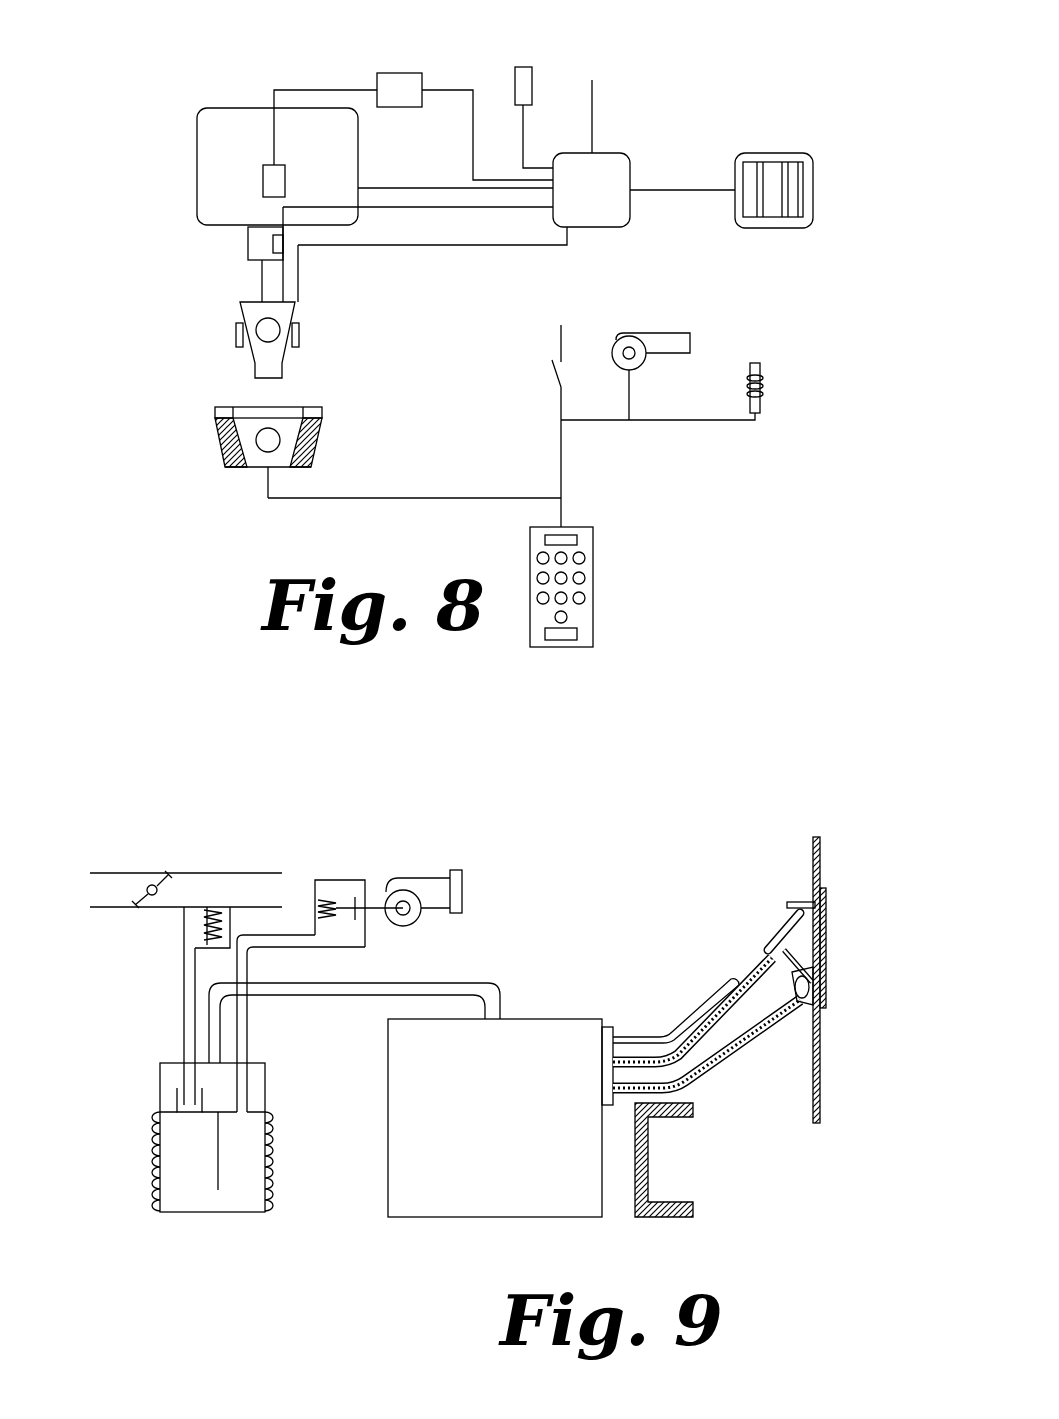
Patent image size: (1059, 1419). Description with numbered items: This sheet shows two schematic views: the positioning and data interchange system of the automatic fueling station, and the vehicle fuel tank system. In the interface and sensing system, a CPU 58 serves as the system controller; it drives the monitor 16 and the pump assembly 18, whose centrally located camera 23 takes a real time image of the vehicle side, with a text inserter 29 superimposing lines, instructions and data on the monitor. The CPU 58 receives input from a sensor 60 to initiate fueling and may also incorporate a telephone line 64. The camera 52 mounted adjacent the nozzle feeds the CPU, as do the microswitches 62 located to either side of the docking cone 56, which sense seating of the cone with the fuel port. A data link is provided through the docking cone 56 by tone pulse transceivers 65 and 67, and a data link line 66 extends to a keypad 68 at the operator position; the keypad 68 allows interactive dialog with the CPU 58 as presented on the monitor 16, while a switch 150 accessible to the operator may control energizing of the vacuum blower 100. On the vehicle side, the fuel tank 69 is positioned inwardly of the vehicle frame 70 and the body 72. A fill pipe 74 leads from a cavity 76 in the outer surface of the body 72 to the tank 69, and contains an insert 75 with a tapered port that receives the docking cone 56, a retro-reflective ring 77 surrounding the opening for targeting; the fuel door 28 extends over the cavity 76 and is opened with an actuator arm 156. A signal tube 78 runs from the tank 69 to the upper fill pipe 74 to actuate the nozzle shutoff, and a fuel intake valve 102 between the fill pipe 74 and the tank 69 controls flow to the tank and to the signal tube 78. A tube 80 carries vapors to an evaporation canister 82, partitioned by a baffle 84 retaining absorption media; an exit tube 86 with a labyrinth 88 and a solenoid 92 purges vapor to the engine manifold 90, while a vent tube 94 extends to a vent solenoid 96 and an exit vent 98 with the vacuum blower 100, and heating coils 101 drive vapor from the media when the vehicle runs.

In FIG. 8, the monitor 16 is at (770, 153).
In FIG. 8, the pump assembly 18 is at (212, 108).
In FIG. 8, the camera 23 is at (263, 183).
In FIG. 9, the fuel door 28 is at (826, 954).
In FIG. 8, the text inserter 29 is at (390, 73).
In FIG. 8, the camera 52 is at (250, 233).
In FIG. 8, the docking cone 56 is at (253, 362).
In FIG. 8, the CPU 58 is at (620, 153).
In FIG. 8, the sensor 60 is at (523, 67).
In FIG. 8, the microswitches 62 is at (300, 338).
In FIG. 8, the telephone line 64 is at (592, 106).
In FIG. 8, the tone pulse transceiver 65 is at (270, 330).
In FIG. 8, the data link line 66 is at (470, 498).
In FIG. 8, the tone pulse transceiver 67 is at (266, 452).
In FIG. 8, the keypad 68 is at (593, 565).
In FIG. 9, the fuel tank 69 is at (458, 1218).
In FIG. 9, the vehicle frame 70 is at (648, 1150).
In FIG. 9, the body 72 is at (820, 862).
In FIG. 9, the fill pipe 74 is at (737, 1050).
In FIG. 8, the insert 75 is at (220, 449).
In FIG. 9, the insert 75 is at (822, 980).
In FIG. 9, the cavity 76 is at (823, 928).
In FIG. 8, the retro-reflective ring 77 is at (322, 408).
In FIG. 9, the retro-reflective ring 77 is at (790, 926).
In FIG. 9, the signal tube 78 is at (684, 1016).
In FIG. 9, the tube 80 is at (483, 984).
In FIG. 9, the evaporation canister 82 is at (227, 1213).
In FIG. 9, the baffle 84 is at (215, 1147).
In FIG. 9, the exit tube 86 is at (184, 990).
In FIG. 9, the labyrinth 88 is at (177, 1098).
In FIG. 9, the engine manifold 90 is at (222, 873).
In FIG. 9, the solenoid 92 is at (205, 923).
In FIG. 9, the vent tube 94 is at (249, 1023).
In FIG. 9, the vent solenoid 96 is at (332, 905).
In FIG. 9, the exit vent 98 is at (368, 935).
In FIG. 8, the vacuum blower 100 is at (655, 333).
In FIG. 9, the vacuum blower 100 is at (406, 878).
In FIG. 9, the heating coils 101 is at (278, 1160).
In FIG. 9, the fuel intake valve 102 is at (607, 1005).
In FIG. 8, the switch 150 is at (577, 632).
In FIG. 9, the actuator arm 156 is at (795, 902).